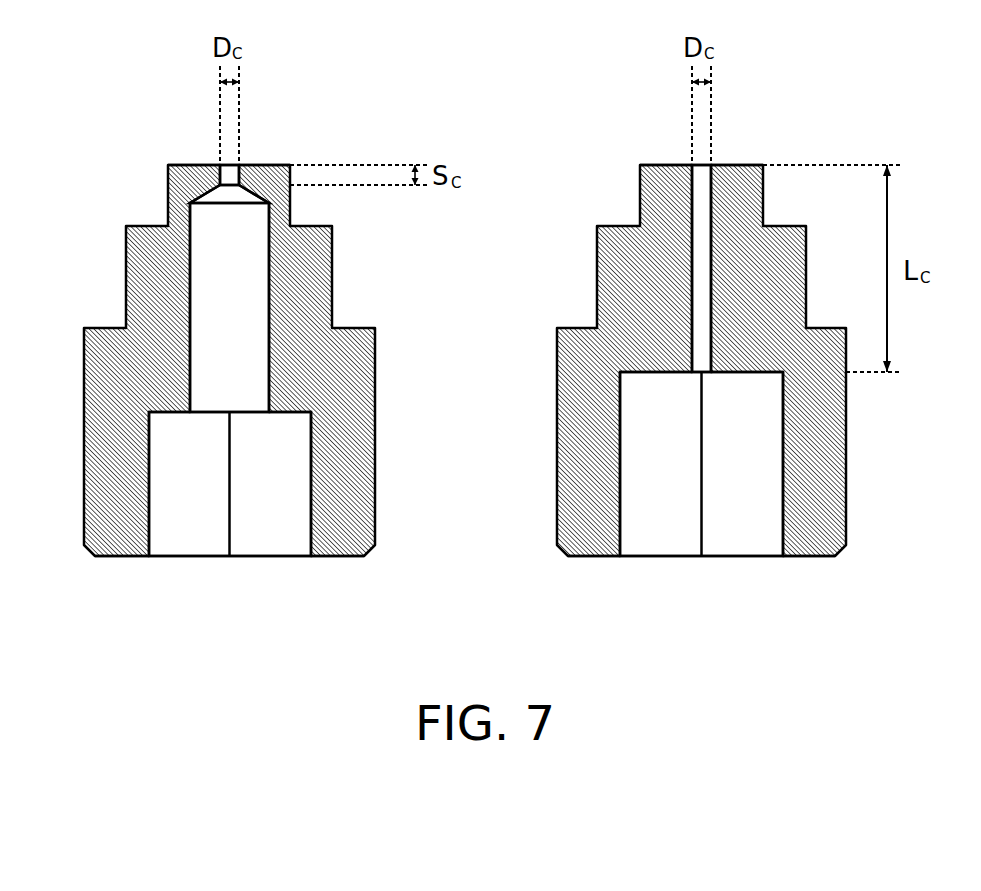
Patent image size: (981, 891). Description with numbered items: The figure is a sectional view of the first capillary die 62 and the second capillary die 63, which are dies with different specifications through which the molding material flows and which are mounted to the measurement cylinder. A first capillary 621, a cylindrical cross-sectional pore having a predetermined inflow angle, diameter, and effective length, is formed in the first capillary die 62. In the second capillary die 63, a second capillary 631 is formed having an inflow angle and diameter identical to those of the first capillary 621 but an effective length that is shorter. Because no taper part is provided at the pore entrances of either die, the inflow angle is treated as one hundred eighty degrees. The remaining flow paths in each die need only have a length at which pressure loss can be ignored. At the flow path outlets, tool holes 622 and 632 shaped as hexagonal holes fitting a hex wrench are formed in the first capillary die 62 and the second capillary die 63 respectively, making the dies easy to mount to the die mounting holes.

The first capillary die 62 is at (572, 528).
The first capillary 621 is at (699, 171).
The tool hole 622 is at (747, 540).
The second capillary die 63 is at (100, 528).
The second capillary 631 is at (227, 171).
The tool hole 632 is at (275, 540).